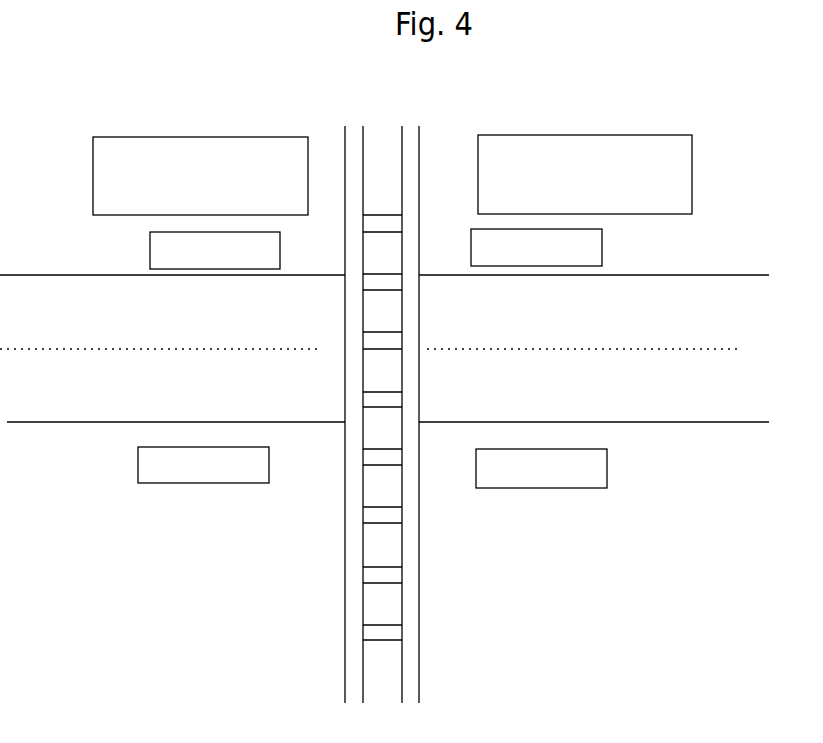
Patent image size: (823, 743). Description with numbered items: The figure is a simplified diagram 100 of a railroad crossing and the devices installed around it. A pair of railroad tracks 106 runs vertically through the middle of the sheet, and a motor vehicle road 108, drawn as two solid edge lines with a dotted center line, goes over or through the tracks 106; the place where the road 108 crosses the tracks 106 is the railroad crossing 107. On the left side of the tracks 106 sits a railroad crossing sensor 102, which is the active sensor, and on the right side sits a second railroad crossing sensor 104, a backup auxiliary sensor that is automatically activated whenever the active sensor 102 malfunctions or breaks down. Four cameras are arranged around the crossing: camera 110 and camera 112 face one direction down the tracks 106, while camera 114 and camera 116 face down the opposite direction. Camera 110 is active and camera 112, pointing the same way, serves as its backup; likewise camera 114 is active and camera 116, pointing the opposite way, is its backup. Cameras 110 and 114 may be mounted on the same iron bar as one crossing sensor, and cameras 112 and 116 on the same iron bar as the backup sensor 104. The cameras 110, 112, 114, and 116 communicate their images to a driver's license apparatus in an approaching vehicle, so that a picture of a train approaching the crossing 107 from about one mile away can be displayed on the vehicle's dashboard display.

The diagram 100 is at (470, 114).
The railroad crossing sensor 102 is at (161, 150).
The railroad crossing sensor 104 is at (533, 137).
The railroad tracks 106 is at (415, 390).
The railroad crossing 107 is at (373, 370).
The motor vehicle road 108 is at (690, 305).
The camera 110 is at (262, 252).
The camera 112 is at (582, 248).
The camera 114 is at (252, 477).
The camera 116 is at (588, 480).